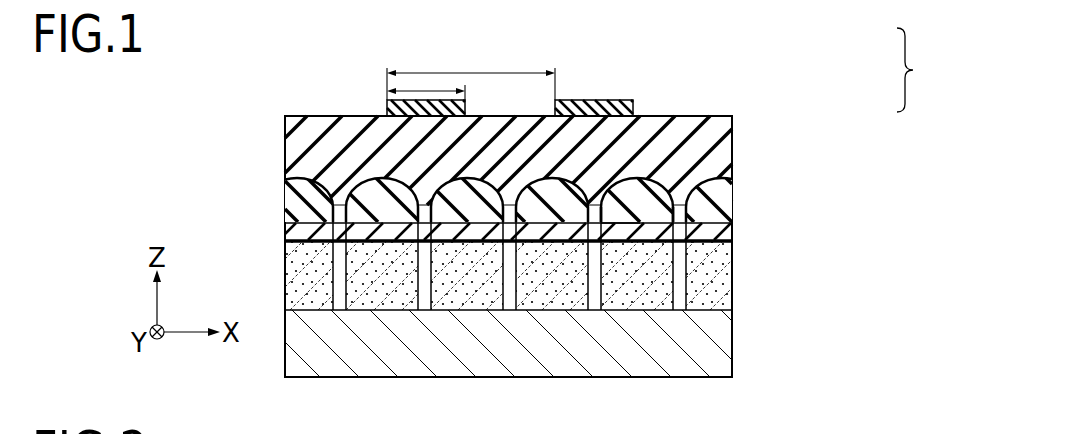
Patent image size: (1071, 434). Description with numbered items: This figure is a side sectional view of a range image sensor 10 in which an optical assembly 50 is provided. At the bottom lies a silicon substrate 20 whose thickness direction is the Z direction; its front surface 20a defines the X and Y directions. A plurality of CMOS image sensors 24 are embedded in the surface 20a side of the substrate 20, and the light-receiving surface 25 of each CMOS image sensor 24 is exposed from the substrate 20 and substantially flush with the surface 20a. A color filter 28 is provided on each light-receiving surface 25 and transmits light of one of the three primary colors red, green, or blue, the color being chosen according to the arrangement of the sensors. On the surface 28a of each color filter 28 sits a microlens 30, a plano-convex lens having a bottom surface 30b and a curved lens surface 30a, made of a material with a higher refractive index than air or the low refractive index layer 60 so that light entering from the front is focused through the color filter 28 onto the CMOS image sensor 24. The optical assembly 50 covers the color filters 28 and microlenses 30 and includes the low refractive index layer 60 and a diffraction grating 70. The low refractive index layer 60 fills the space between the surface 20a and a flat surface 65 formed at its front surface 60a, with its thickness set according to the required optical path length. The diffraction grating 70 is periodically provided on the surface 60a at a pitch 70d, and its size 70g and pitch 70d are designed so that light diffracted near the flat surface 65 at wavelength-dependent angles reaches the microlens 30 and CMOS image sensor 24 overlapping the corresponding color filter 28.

The range image sensor 10 is at (741, 99).
The substrate 20 is at (733, 330).
The surface 20a is at (712, 231).
The CMOS image sensor 24 is at (675, 267).
The light-receiving surface 25 is at (690, 204).
The color filter 28 is at (690, 190).
The surface 28a is at (621, 228).
The microlens 30 is at (637, 178).
The lens surface 30a is at (672, 205).
The bottom surface 30b is at (628, 225).
The optical assembly 50 is at (922, 70).
The low refractive index layer 60 is at (733, 138).
The surface 60a is at (338, 115).
The flat surface 65 is at (458, 74).
The diffraction grating 70 is at (618, 98).
The size 70g is at (433, 90).
The pitch 70d is at (508, 73).